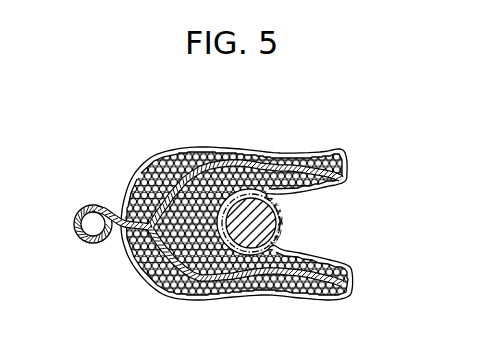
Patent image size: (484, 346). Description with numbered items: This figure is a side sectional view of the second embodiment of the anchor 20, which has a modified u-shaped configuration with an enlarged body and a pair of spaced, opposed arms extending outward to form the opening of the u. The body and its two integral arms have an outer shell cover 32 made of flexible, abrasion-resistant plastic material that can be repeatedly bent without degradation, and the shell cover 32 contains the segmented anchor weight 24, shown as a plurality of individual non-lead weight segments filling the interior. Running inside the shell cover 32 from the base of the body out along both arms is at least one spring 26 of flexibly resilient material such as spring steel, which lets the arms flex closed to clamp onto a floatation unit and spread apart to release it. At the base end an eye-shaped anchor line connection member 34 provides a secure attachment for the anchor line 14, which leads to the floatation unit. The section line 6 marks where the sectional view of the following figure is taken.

The anchor 20 is at (176, 128).
The section line 6 is at (354, 118).
The anchor line 14 is at (283, 232).
The segmented anchor weight 24 is at (205, 238).
The spring 26 is at (138, 265).
The shell cover 32 is at (177, 300).
The anchor line connection member 34 is at (95, 206).